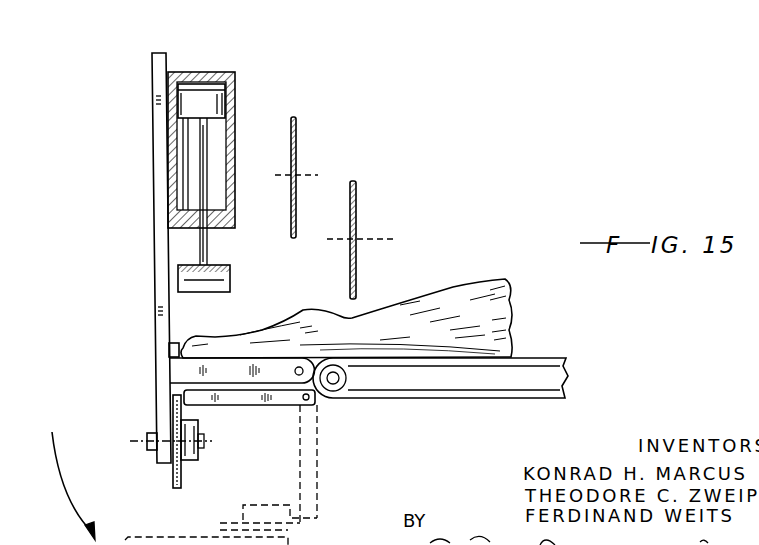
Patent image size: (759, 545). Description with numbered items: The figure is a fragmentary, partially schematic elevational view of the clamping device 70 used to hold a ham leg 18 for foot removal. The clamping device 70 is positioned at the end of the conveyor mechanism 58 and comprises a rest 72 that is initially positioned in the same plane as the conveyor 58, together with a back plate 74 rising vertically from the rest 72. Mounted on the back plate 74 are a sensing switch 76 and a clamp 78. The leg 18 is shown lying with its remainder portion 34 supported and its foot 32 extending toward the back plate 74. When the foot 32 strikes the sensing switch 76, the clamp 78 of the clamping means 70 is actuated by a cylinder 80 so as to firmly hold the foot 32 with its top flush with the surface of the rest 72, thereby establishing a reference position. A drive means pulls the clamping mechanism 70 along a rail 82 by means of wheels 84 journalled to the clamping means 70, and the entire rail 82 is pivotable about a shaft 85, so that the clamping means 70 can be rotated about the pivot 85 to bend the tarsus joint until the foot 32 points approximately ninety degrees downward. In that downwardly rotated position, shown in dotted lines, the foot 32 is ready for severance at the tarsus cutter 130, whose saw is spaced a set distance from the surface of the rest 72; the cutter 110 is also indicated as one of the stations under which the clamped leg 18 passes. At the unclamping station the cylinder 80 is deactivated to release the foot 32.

The clamping device 70 is at (112, 251).
The back plate 74 is at (158, 305).
The cylinder 80 is at (212, 73).
The clamp 78 is at (232, 280).
The tarsus cutter 130 is at (306, 128).
The cutter 110 is at (364, 199).
The ham leg 18 is at (482, 302).
The foot 32 is at (282, 335).
The remainder portion 34 is at (427, 315).
The sensing switch 76 is at (162, 353).
The rest 72 is at (170, 378).
The rail 82 is at (243, 405).
The shaft 85 is at (312, 399).
The wheels 84 is at (180, 472).
The conveyor mechanism 58 is at (461, 361).